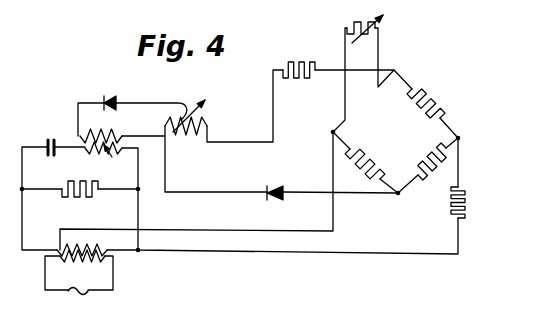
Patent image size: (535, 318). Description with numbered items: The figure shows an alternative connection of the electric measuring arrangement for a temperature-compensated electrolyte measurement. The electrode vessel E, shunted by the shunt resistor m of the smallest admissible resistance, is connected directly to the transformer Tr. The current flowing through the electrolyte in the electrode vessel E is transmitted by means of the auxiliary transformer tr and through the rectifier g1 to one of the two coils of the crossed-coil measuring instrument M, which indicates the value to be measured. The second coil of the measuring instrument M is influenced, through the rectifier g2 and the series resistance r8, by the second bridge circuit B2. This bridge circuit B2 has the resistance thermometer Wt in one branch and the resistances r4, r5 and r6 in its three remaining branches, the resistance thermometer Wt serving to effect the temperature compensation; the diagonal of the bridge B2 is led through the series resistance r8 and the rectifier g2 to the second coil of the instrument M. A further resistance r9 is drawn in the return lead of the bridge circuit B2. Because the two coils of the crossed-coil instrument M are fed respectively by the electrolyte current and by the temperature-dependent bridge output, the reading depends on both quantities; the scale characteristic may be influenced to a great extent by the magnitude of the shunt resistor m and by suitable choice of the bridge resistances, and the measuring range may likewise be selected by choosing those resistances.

The electrode vessel E is at (50, 136).
The rectifier g1 is at (114, 92).
The auxiliary transformer tr is at (101, 144).
The shunt resistor m is at (80, 180).
The transformer Tr is at (91, 269).
The measuring instrument M is at (196, 116).
The rectifier g2 is at (279, 183).
The series resistance r8 is at (307, 63).
The resistance thermometer Wt is at (380, 29).
The resistance r6 is at (423, 93).
The second bridge circuit B2 is at (389, 134).
The resistance r4 is at (373, 158).
The resistance r5 is at (425, 178).
The resistor r9 is at (465, 203).